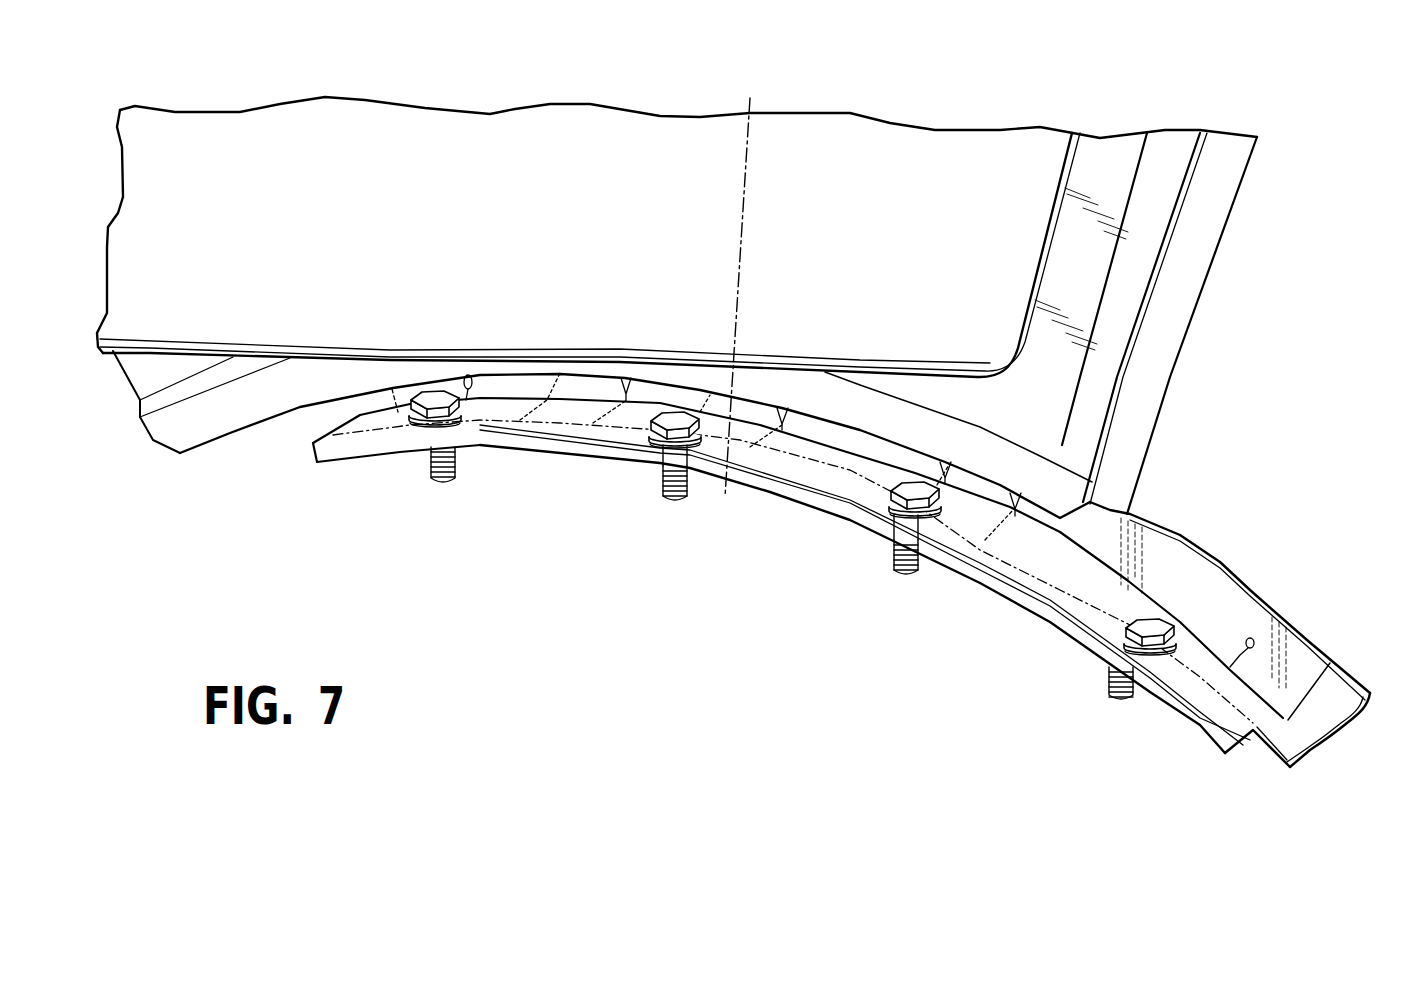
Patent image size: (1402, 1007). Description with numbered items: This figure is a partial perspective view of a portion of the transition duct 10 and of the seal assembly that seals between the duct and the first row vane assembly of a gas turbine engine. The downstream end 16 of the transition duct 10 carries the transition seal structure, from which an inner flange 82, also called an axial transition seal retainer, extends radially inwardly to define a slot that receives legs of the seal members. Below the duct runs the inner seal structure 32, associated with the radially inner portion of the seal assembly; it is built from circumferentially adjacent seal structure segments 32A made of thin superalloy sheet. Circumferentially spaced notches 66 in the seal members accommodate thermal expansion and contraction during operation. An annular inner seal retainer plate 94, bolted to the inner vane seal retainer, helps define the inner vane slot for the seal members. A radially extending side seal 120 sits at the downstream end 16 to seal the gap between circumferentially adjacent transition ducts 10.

The transition duct 10 is at (893, 158).
The downstream end 16 is at (1095, 185).
The side seal 120 is at (1187, 253).
The inner flange 82 is at (1050, 478).
The annular inner seal retainer plate 94 is at (385, 440).
The inner seal structure 32 is at (1303, 775).
The seal structure segment 32A is at (1207, 590).
The notch 66 is at (543, 390).